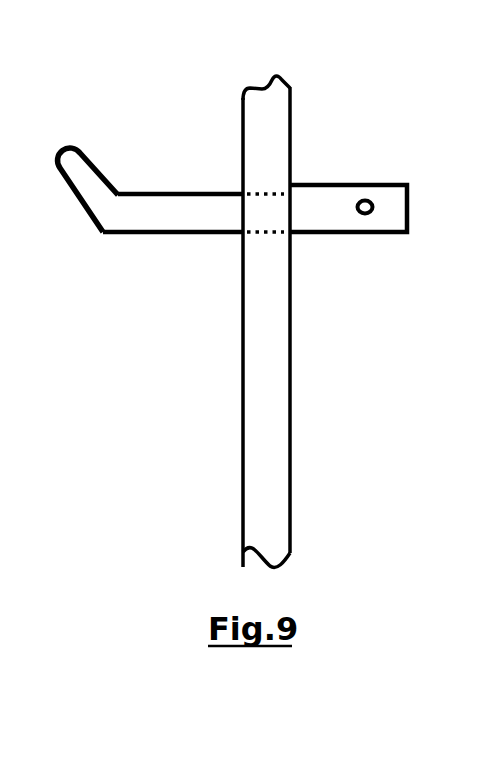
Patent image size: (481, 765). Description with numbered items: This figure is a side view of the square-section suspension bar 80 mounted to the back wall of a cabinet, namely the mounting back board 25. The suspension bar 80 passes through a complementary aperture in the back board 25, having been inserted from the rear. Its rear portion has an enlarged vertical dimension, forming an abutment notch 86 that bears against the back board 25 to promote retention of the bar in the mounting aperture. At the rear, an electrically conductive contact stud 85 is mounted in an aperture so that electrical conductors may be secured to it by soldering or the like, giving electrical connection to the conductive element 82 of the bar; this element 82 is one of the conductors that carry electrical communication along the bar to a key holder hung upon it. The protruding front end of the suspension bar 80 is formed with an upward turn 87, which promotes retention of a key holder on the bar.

The mounting back board 25 is at (267, 439).
The suspension bar 80 is at (187, 178).
The electrically conductive element 82 is at (147, 218).
The electrically conductive contact stud 85 is at (373, 206).
The abutment notch 86 is at (293, 183).
The upward turn 87 is at (90, 187).